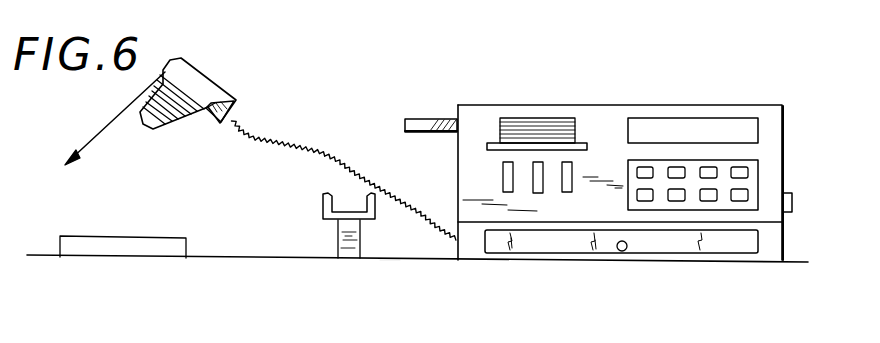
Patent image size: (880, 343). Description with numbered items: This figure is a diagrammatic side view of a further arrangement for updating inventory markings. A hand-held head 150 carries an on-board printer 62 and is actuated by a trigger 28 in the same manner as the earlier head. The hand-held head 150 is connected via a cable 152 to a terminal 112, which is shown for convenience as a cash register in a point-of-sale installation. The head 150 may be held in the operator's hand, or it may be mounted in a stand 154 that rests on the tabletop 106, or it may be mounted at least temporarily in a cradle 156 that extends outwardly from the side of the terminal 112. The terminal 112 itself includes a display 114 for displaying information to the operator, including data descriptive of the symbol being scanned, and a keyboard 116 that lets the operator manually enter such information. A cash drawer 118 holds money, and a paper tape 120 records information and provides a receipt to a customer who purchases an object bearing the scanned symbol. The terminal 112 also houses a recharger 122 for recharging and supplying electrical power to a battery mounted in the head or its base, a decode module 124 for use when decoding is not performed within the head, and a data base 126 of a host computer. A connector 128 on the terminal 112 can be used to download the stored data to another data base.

The hand-held head 150 is at (168, 59).
The on-board printer 62 is at (234, 104).
The trigger 28 is at (200, 110).
The cable 152 is at (343, 152).
The stand 154 is at (325, 203).
The tabletop 106 is at (389, 260).
The terminal 112 is at (648, 104).
The cradle 156 is at (447, 120).
The paper tape 120 is at (545, 118).
The recharger 122 is at (502, 170).
The decode module 124 is at (538, 193).
The data base 126 is at (572, 183).
The display 114 is at (698, 137).
The keyboard 116 is at (747, 175).
The cash drawer 118 is at (753, 247).
The connector 128 is at (793, 194).